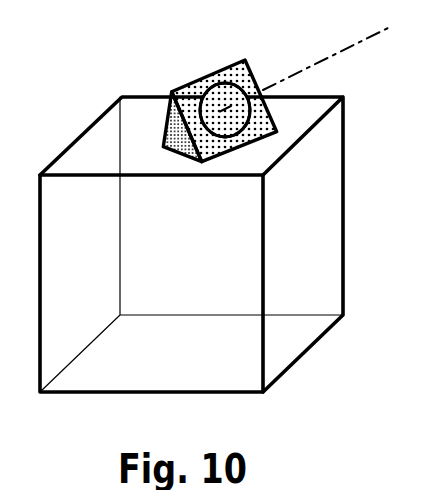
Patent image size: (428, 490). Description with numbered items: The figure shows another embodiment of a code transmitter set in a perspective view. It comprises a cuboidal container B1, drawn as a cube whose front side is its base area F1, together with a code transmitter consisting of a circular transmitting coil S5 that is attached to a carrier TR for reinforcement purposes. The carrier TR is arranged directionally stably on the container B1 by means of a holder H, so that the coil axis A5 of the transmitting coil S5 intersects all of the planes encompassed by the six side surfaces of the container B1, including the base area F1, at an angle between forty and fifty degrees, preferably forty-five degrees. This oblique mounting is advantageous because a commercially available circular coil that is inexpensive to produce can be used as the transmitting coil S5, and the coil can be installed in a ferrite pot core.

The cuboidal container B1 is at (83, 128).
The base area of B1 F1 is at (203, 362).
The carrier TR is at (179, 85).
The holder H is at (167, 115).
The transmitting coil S5 is at (218, 85).
The coil axis of transmitting coil S5 A5 is at (333, 57).